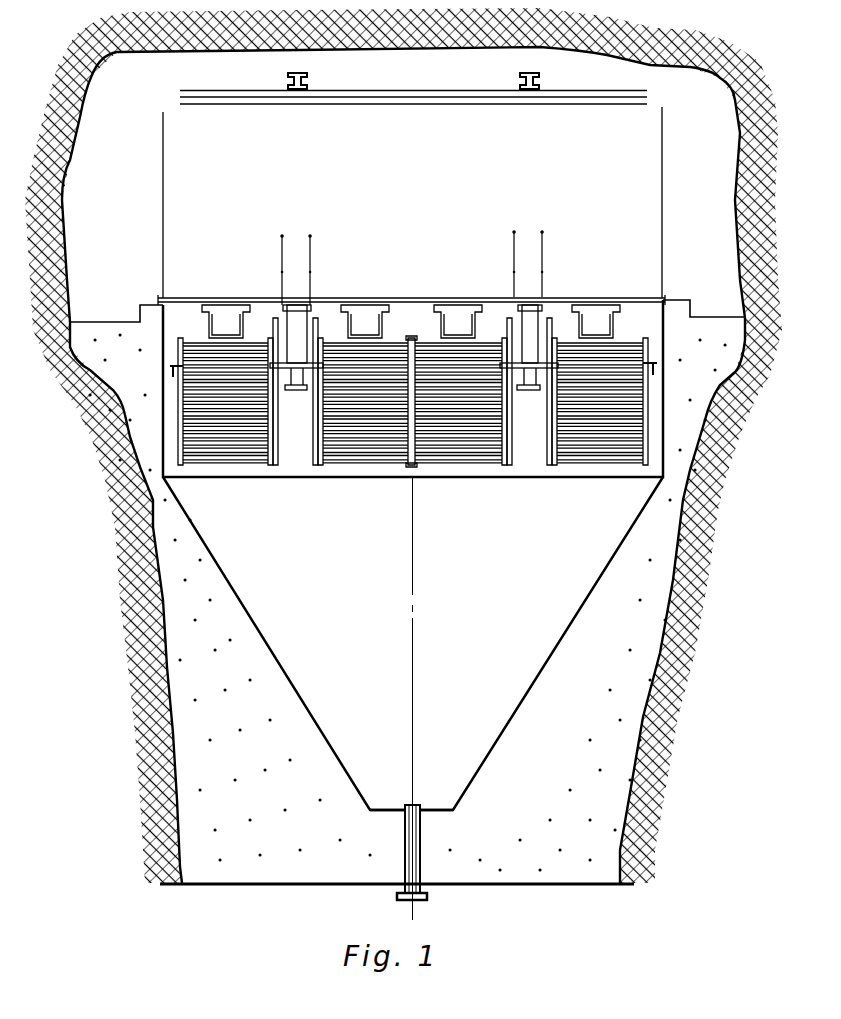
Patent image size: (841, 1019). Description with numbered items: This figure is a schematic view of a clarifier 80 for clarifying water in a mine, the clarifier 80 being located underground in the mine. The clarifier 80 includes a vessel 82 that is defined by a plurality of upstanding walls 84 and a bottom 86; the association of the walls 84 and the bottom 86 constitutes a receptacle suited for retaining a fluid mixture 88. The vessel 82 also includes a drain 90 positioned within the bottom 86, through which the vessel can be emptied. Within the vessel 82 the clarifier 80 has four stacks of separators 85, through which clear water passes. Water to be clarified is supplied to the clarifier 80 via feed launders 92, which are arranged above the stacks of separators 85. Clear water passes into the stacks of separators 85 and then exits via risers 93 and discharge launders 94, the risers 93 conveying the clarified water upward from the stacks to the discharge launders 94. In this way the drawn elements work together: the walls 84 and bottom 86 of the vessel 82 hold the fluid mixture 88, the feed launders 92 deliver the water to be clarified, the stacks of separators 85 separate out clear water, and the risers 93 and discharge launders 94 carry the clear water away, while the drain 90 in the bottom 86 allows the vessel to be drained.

The clarifier 80 is at (645, 116).
The vessel 82 is at (250, 608).
The upstanding walls 84 is at (120, 450).
The stacks of separators 85 is at (223, 472).
The bottom 86 is at (388, 805).
The fluid mixture 88 is at (457, 631).
The drain 90 is at (415, 803).
The feed launders 92 is at (228, 310).
The risers 93 is at (305, 305).
The discharge launders 94 is at (298, 324).